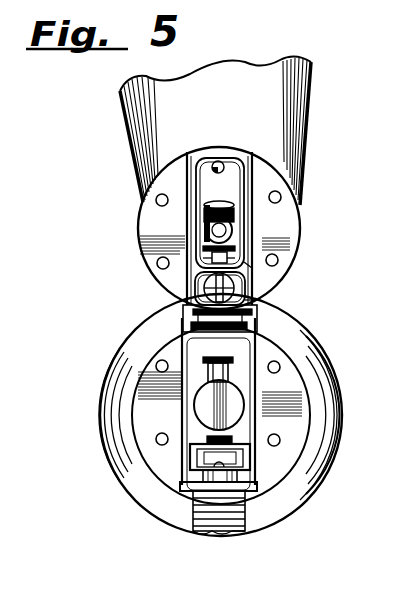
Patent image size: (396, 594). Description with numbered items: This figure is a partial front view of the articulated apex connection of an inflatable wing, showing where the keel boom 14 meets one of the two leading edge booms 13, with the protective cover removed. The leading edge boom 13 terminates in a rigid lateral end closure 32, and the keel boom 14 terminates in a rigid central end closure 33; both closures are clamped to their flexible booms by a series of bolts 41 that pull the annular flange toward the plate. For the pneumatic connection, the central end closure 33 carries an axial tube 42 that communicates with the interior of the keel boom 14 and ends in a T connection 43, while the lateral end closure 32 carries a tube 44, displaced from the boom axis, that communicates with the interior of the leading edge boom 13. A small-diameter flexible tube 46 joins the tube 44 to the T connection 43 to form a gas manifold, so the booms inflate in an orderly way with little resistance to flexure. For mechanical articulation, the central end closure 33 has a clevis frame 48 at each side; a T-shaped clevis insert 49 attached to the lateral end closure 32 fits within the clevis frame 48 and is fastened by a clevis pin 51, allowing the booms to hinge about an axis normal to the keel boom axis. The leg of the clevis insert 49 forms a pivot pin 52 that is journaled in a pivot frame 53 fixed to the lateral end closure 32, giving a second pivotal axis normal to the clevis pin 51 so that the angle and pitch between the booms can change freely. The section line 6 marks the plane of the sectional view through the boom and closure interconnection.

The section line 6- 6 is at (265, 228).
The leading edge boom 13 is at (302, 135).
The keel boom 14 is at (303, 333).
The lateral end closure 32 is at (298, 234).
The central end closure 33 is at (292, 393).
The bolts 41 is at (158, 262).
The axial tube 42 is at (226, 386).
The T connection 43 is at (204, 369).
The tube 44 is at (220, 203).
The flexible tube 46 is at (236, 531).
The clevis frame 48 is at (260, 330).
The clevis insert 49 is at (253, 304).
The clevis pin 51 is at (228, 364).
The pivot pin 52 is at (183, 282).
The pivot frame 53 is at (270, 276).